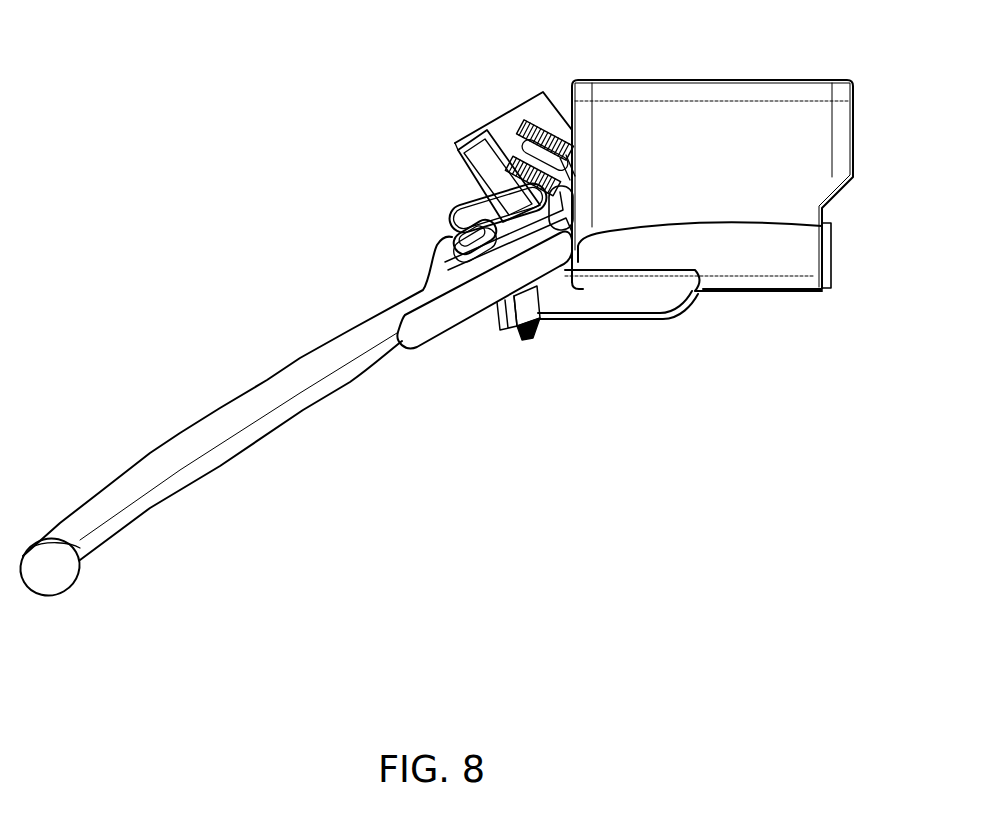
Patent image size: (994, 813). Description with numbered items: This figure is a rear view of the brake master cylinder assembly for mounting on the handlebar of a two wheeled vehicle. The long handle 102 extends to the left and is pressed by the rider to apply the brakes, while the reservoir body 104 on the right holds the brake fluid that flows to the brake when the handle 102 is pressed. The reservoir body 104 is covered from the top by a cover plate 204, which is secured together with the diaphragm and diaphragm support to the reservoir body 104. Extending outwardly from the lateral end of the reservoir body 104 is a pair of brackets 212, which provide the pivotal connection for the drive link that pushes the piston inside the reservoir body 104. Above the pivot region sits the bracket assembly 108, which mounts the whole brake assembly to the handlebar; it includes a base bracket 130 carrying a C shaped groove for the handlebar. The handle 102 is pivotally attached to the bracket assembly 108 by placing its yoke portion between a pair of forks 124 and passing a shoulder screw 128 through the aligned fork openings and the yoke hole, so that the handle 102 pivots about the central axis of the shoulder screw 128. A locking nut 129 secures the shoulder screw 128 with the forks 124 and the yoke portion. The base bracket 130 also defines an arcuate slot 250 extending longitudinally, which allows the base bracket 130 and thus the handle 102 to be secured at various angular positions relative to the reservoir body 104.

The handle 102 is at (427, 326).
The reservoir body 104 is at (797, 168).
The bracket assembly 108 is at (495, 108).
The forks 124 is at (540, 333).
The shoulder screw 128 is at (447, 241).
The locking nut 129 is at (513, 333).
The base bracket 130 is at (468, 204).
The cover plate 204 is at (771, 80).
The brackets 212 is at (563, 312).
The arcuate slot 250 is at (540, 130).